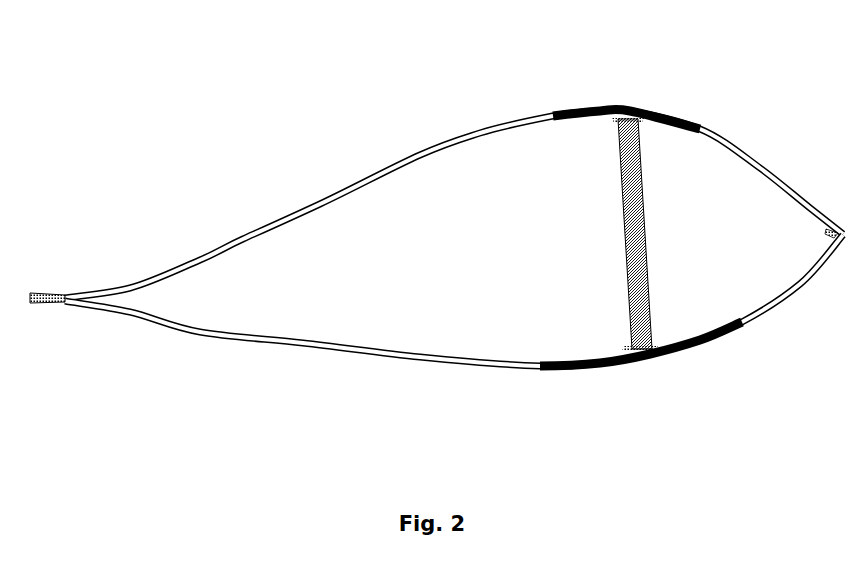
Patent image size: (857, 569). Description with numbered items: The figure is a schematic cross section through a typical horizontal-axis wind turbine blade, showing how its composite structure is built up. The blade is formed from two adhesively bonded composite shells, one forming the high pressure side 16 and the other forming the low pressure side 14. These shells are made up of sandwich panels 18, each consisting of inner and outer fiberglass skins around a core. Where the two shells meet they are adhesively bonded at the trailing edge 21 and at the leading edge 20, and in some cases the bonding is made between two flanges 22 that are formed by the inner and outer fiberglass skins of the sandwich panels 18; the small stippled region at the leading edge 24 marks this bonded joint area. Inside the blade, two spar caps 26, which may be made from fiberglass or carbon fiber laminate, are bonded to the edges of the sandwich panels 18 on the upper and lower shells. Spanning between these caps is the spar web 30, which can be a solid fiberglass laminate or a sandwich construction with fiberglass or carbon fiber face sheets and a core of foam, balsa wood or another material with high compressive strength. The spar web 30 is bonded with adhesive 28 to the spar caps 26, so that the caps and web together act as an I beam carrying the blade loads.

The low pressure side 14 is at (537, 370).
The high pressure side 16 is at (453, 137).
The sandwich panels 18 is at (308, 213).
The leading edge 20 is at (843, 238).
The trailing edge 21 is at (30, 304).
The flanges 22 is at (828, 233).
The leading edge 24 is at (55, 295).
The spar caps 26 is at (617, 113).
The adhesive 28 is at (612, 121).
The spar web 30 is at (643, 262).